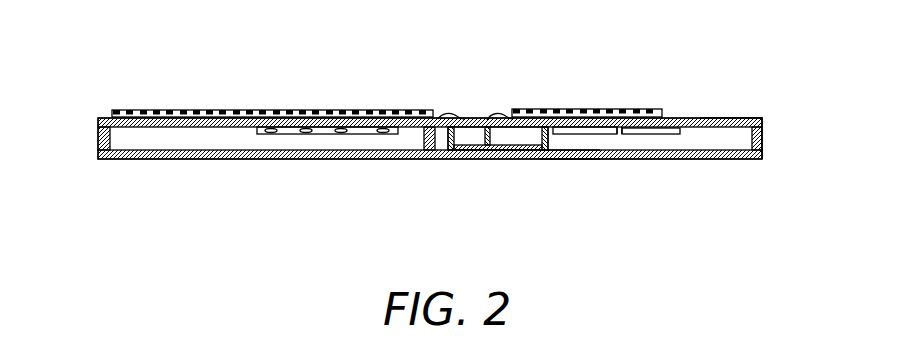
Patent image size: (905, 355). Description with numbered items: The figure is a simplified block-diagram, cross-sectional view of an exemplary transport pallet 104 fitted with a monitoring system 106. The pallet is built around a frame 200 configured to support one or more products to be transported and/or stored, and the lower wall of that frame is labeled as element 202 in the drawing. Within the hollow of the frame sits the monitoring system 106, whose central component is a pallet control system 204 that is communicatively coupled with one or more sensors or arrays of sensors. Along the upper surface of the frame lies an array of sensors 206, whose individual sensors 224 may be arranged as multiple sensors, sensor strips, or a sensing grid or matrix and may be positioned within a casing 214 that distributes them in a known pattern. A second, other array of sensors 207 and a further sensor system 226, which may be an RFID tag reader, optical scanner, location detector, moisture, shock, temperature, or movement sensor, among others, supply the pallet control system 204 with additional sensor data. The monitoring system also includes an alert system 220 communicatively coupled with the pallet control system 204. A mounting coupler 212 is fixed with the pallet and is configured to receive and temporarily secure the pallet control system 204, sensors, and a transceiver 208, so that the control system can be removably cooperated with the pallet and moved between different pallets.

The frame 200 is at (98, 130).
The bottom wall 202 is at (360, 175).
The monitoring system 106 is at (572, 170).
The transport pallet 104 is at (767, 82).
The casing 214 is at (113, 110).
The sensors 224 is at (368, 110).
The array of sensors 206 is at (208, 110).
The alert system 220 is at (280, 134).
The transceiver 208 is at (458, 135).
The pallet control system 204 is at (490, 135).
The mounting coupler 212 is at (541, 137).
The other array of sensors 207 is at (617, 148).
The sensor system 226 is at (668, 134).